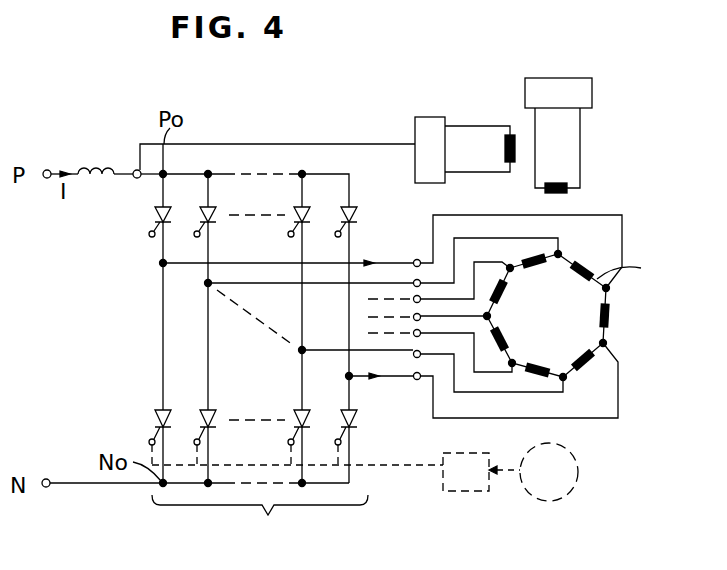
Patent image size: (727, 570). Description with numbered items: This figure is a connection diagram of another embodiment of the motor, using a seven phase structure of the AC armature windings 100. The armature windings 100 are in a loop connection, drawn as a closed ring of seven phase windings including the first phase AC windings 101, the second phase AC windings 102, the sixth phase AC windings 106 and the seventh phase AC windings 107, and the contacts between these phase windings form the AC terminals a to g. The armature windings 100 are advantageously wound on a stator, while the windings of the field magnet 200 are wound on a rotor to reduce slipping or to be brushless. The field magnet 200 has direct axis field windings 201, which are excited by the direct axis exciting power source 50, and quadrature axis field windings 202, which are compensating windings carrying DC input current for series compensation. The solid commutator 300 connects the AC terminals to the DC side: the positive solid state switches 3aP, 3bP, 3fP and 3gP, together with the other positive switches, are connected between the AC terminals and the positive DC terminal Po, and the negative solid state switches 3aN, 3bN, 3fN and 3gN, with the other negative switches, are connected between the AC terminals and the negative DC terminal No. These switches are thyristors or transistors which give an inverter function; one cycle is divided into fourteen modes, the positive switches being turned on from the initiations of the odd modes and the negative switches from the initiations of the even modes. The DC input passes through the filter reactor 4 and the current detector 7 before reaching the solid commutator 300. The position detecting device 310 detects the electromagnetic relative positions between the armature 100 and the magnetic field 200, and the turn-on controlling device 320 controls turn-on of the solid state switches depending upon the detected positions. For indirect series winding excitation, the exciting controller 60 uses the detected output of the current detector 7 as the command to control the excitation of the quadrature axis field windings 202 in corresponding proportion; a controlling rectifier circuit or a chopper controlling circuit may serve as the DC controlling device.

The filter reactor 4 is at (91, 168).
The current detector 7 is at (135, 169).
The exciting controller 60 is at (430, 130).
The quadrature axis field windings 202 is at (502, 143).
The direct axis exciting power source 50 is at (557, 93).
The direct axis field windings 201 is at (555, 183).
The field magnet 200 is at (592, 108).
The armature windings 100 is at (562, 303).
The first phase AC windings 101 is at (587, 269).
The second phase AC windings 102 is at (528, 252).
The sixth phase AC windings 106 is at (588, 367).
The seventh phase AC windings 107 is at (608, 315).
The solid commutator 300 is at (246, 363).
The position detecting device 310 is at (645, 493).
The turn-on controlling device 320 is at (462, 492).
The positive solid state switch 3aP is at (155, 215).
The positive solid state switch 3bP is at (205, 222).
The positive solid state switch 3fP is at (299, 222).
The positive solid state switch 3gP is at (357, 216).
The negative solid state switch 3aN is at (156, 422).
The negative solid state switch 3bN is at (200, 419).
The negative solid state switch 3fN is at (299, 427).
The negative solid state switch 3gN is at (357, 418).